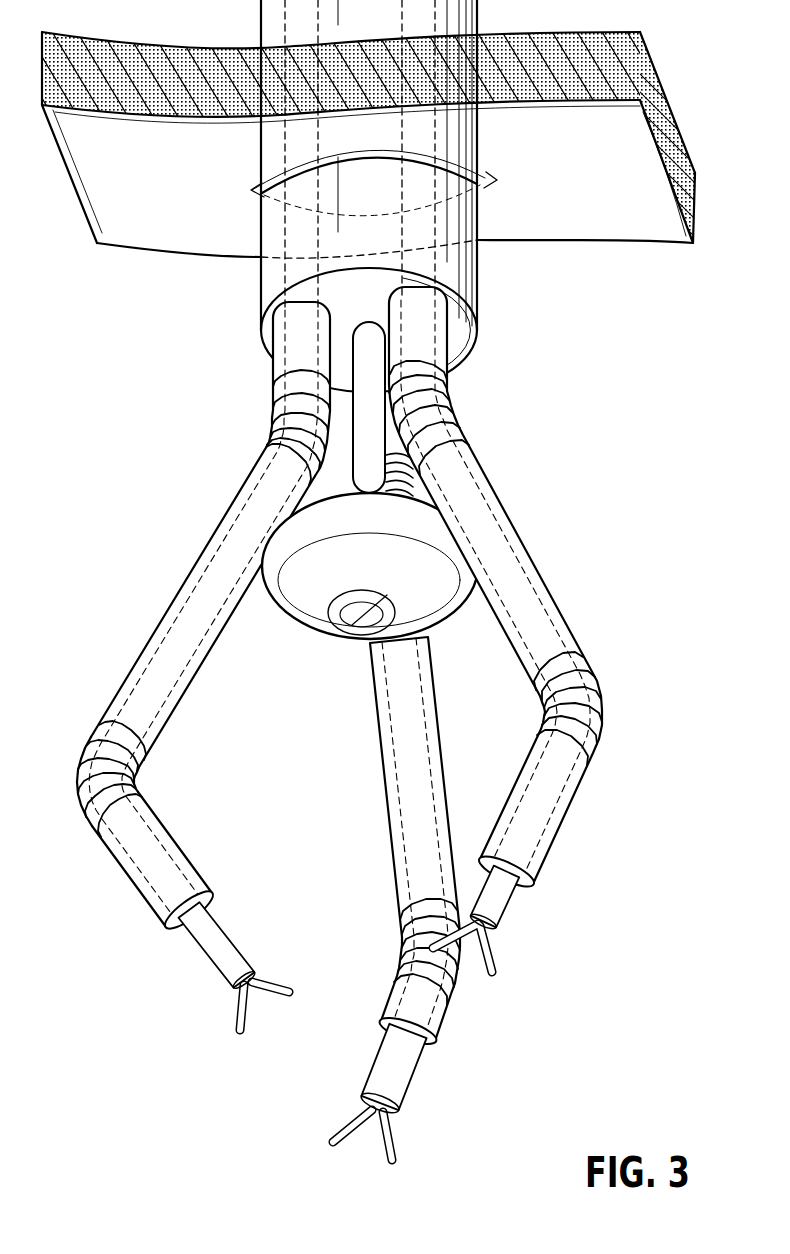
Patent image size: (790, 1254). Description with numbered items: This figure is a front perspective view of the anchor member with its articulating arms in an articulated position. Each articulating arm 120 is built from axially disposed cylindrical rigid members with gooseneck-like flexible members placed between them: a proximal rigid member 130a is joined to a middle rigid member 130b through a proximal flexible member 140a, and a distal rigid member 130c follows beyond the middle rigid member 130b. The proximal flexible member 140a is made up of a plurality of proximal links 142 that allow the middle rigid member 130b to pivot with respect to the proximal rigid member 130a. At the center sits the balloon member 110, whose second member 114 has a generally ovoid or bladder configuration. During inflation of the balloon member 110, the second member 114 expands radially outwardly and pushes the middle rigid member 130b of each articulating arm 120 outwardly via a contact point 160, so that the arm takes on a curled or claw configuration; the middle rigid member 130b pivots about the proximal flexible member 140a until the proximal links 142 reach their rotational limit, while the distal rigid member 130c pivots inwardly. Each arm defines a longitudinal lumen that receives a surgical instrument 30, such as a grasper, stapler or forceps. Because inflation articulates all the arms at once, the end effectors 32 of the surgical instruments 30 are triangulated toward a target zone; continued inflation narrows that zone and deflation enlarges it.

The articulating arm 120 is at (138, 556).
The proximal rigid member 130a is at (293, 344).
The middle rigid member 130b is at (152, 667).
The distal rigid member 130c is at (180, 848).
The proximal flexible member 140a is at (270, 433).
The proximal links 142 is at (300, 403).
The contact point 160 is at (263, 553).
The balloon member 110 is at (305, 603).
The second member 114 is at (313, 613).
The end effectors 32 is at (210, 950).
The surgical instrument 30 is at (215, 1005).